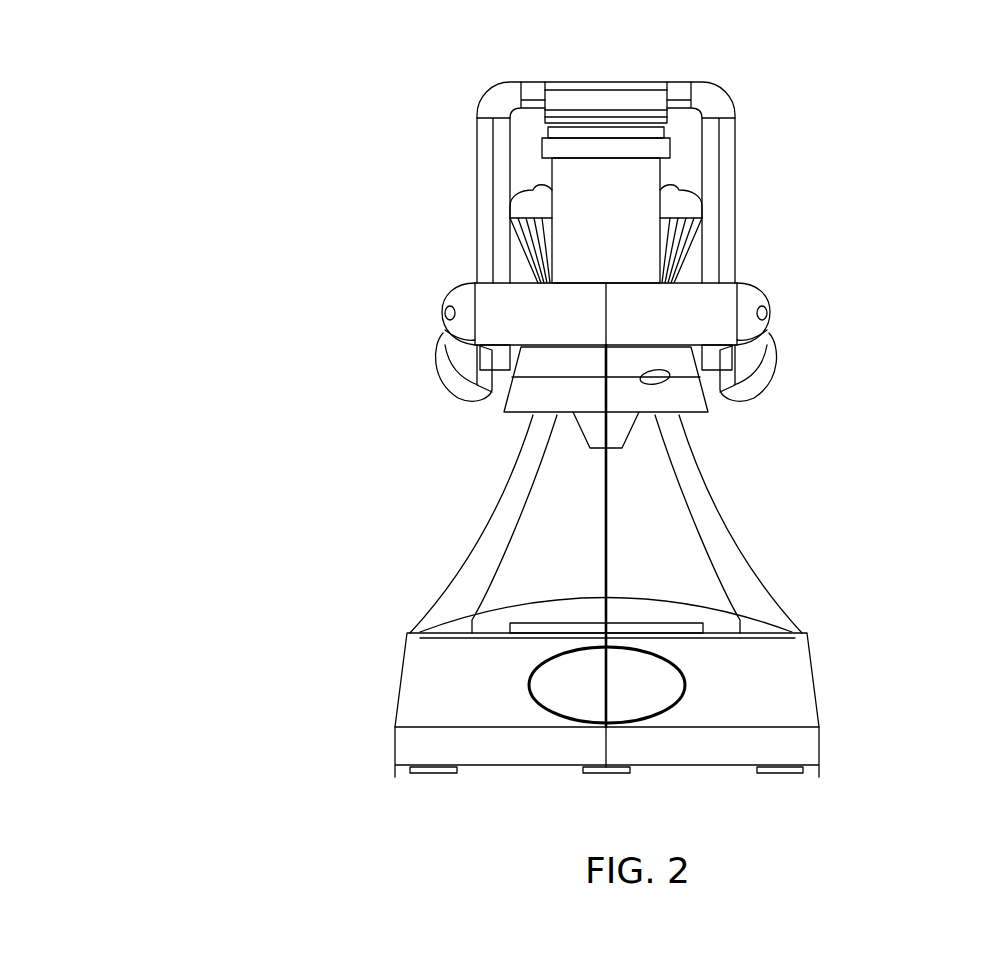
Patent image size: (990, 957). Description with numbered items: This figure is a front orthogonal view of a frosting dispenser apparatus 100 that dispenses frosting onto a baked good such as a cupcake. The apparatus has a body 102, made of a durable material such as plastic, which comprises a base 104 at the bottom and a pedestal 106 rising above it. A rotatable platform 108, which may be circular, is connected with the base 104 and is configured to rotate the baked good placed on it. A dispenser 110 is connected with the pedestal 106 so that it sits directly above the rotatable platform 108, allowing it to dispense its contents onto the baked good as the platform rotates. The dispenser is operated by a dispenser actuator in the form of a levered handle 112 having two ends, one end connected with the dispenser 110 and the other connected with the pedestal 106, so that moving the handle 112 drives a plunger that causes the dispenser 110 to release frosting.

The frosting dispenser apparatus 100 is at (155, 90).
The body 102 is at (810, 663).
The base 104 is at (405, 752).
The pedestal 106 is at (703, 525).
The rotatable platform 108 is at (480, 620).
The dispenser 110 is at (653, 213).
The handle 112 is at (453, 355).